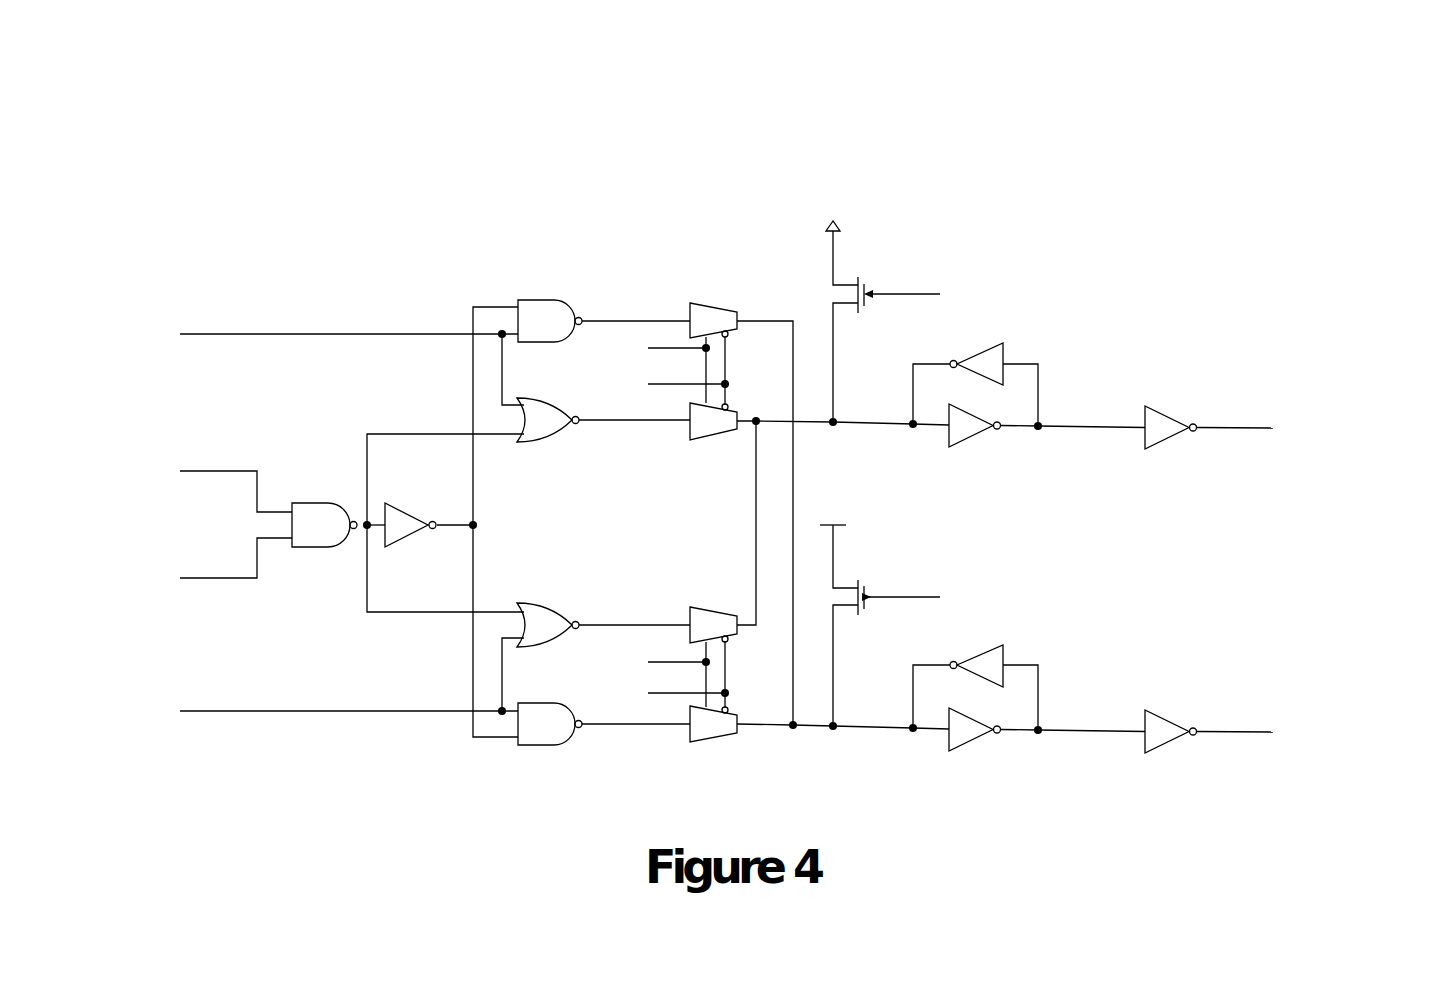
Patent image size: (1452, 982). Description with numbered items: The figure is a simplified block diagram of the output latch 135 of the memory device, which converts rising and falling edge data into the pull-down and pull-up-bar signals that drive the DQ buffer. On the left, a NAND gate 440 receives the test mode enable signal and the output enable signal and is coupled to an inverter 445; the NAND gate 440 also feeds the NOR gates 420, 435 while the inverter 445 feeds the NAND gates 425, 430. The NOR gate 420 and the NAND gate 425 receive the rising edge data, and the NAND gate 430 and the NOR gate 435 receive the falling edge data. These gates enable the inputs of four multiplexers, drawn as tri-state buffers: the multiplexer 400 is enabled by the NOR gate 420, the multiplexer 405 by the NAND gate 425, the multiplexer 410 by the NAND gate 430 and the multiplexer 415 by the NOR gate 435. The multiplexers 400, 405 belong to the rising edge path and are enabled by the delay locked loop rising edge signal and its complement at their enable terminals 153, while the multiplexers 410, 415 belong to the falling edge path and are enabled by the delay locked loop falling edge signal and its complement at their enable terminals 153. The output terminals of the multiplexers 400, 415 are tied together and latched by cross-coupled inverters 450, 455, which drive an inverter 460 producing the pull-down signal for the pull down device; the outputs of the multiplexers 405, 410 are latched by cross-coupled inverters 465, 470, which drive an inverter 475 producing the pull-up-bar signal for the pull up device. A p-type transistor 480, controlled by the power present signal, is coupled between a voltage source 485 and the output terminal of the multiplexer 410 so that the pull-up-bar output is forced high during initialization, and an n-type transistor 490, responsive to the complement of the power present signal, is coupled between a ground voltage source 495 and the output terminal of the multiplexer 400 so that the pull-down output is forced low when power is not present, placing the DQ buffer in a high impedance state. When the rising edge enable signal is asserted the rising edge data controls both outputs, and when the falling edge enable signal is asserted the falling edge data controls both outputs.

The output latch 135 is at (273, 223).
The enable terminals 153 is at (668, 340).
The multiplexer 400 is at (708, 438).
The multiplexer 405 is at (712, 300).
The multiplexer 410 is at (703, 765).
The multiplexer 415 is at (703, 605).
The NOR gate 420 is at (550, 437).
The NAND gate 425 is at (547, 300).
The NAND gate 430 is at (542, 747).
The NOR gate 435 is at (540, 602).
The NAND gate 440 is at (328, 502).
The inverter 445 is at (412, 533).
The inverter 450 is at (975, 433).
The inverter 455 is at (1003, 343).
The inverter 460 is at (1172, 437).
The inverter 465 is at (963, 745).
The inverter 470 is at (1003, 653).
The inverter 475 is at (1160, 740).
The p-type transistor 480 is at (863, 580).
The voltage source 485 is at (835, 522).
The n-type transistor 490 is at (864, 277).
The ground voltage source 495 is at (843, 227).